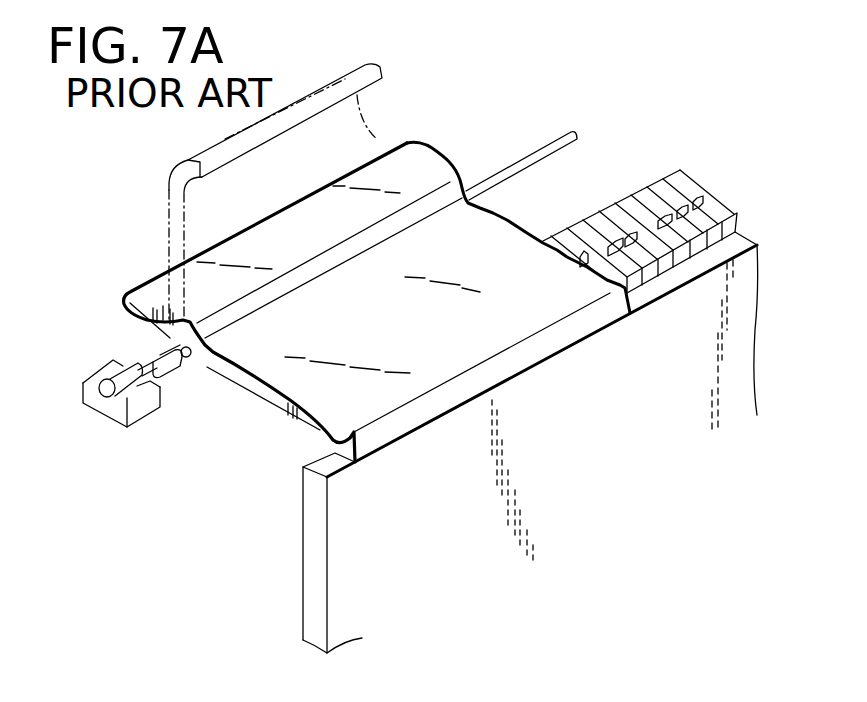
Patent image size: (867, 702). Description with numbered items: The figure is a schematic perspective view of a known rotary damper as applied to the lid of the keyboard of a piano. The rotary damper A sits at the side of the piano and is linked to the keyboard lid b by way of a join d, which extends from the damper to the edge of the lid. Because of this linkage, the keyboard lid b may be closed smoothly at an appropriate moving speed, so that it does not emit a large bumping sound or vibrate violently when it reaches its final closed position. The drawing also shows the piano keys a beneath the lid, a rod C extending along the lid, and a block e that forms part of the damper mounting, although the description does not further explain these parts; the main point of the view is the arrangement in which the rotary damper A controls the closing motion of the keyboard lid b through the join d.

The keyboard keys a is at (715, 208).
The keyboard lid b is at (267, 395).
The rod C is at (530, 155).
The join d is at (173, 348).
The base block e is at (132, 395).
The rotary damper A is at (86, 374).